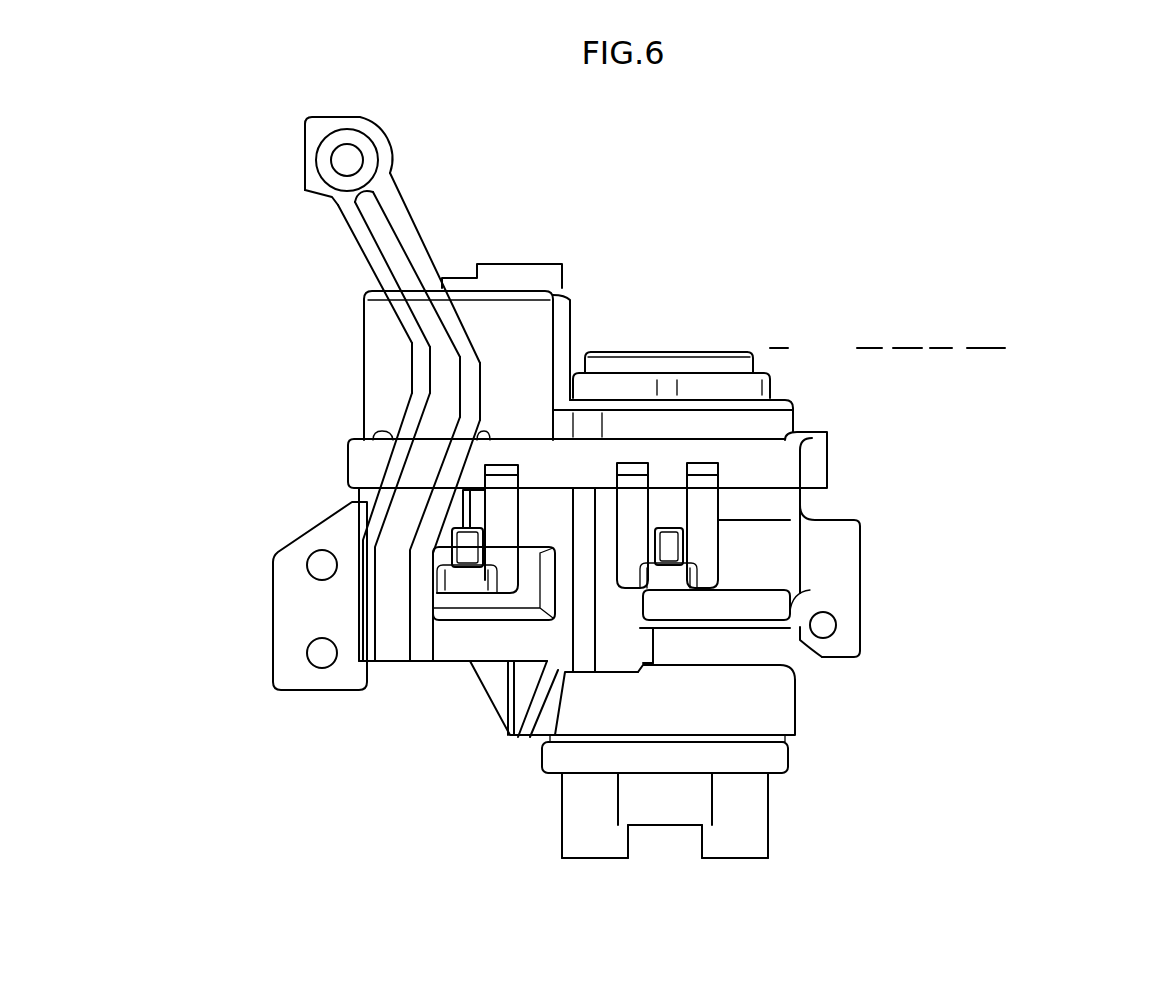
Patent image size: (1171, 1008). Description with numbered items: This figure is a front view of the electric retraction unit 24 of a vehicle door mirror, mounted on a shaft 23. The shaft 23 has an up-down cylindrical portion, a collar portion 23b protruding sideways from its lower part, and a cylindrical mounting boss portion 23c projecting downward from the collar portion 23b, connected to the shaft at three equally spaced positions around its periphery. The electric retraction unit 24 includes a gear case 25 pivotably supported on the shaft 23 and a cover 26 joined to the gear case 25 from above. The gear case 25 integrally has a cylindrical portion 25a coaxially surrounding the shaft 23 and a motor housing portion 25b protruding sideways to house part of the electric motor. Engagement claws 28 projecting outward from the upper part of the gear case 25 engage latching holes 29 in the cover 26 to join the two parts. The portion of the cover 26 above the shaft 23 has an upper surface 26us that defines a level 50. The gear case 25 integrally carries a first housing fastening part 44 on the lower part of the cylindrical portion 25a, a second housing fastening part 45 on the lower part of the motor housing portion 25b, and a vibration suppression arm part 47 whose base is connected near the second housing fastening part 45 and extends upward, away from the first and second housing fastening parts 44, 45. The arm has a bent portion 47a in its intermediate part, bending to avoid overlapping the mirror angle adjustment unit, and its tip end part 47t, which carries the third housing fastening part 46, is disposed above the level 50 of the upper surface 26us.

The shaft 23 is at (552, 788).
The collar portion 23b is at (773, 757).
The cylindrical mounting boss portion 23c is at (570, 835).
The electric retraction unit 24 is at (830, 458).
The gear case 25 is at (797, 713).
The cylindrical portion 25a is at (760, 643).
The motor housing portion 25b is at (448, 652).
The cover 26 is at (773, 423).
The upper surface 26us is at (738, 345).
The engagement claw 28 is at (468, 555).
The latching hole 29 is at (475, 540).
The first housing fastening part 44 is at (838, 572).
The second housing fastening part 45 is at (297, 620).
The third housing fastening part 46 is at (385, 137).
The vibration suppression arm part 47 is at (372, 255).
The bent portion 47a is at (472, 393).
The tip end part 47t is at (305, 153).
The level 50 is at (993, 355).